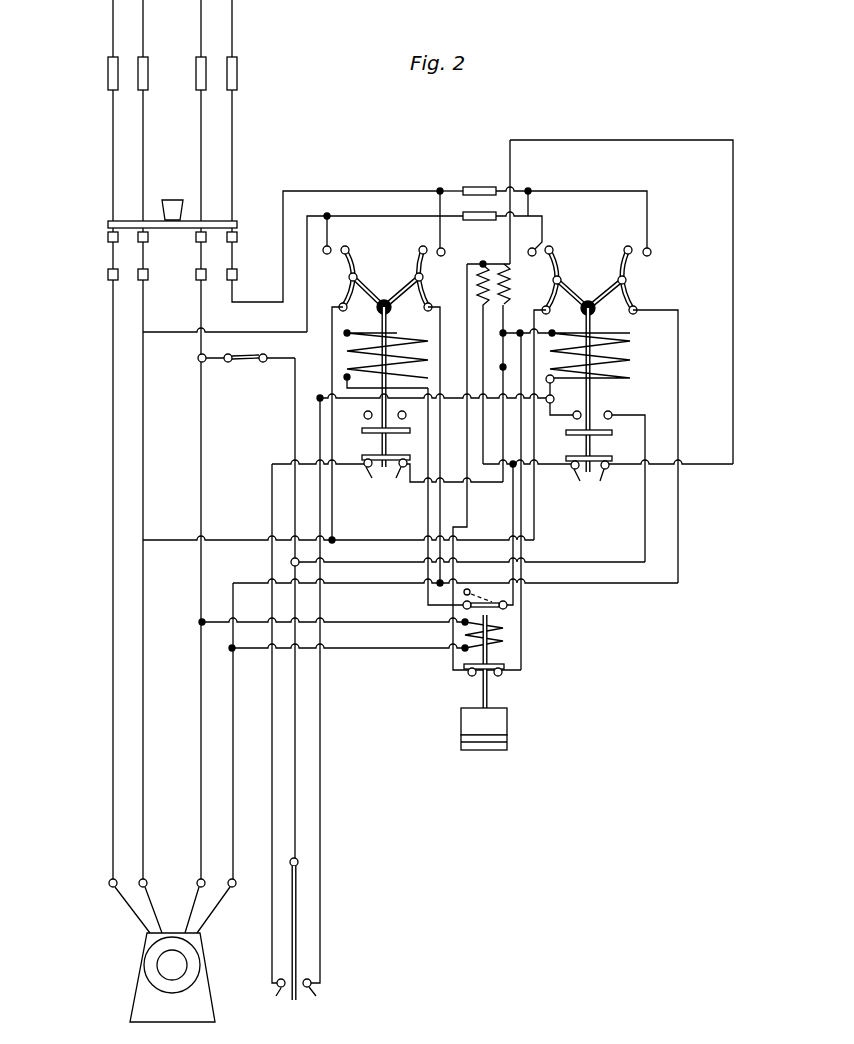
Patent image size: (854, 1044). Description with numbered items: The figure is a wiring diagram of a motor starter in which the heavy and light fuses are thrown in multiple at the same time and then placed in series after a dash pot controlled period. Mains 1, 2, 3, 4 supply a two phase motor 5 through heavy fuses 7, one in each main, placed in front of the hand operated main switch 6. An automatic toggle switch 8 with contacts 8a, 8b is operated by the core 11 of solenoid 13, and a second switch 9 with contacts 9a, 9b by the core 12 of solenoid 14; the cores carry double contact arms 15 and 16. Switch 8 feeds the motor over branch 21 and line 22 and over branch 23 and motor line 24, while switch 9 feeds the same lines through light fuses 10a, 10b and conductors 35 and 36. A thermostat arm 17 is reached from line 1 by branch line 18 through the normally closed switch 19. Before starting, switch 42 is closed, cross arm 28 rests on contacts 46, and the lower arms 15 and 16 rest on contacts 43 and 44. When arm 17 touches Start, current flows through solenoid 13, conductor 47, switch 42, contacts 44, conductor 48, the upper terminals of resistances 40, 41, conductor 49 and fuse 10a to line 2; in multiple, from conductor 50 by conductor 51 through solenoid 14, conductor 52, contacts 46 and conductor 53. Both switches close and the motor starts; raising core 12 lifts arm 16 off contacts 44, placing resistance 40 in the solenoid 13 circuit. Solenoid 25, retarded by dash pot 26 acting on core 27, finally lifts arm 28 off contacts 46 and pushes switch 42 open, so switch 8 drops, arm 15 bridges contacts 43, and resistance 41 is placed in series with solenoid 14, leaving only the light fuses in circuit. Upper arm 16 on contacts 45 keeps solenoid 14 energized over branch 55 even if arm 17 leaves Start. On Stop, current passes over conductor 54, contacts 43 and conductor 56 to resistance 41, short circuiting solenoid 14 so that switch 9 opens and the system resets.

The main 1 is at (201, 27).
The main 2 is at (232, 28).
The main 3 is at (113, 22).
The main 4 is at (143, 26).
The motor 5 is at (168, 950).
The main switch 6 is at (108, 222).
The heavy fuses 7 is at (248, 82).
The automatically operating switch 8 is at (385, 280).
The contact 8a is at (437, 250).
The switch terminal 8b is at (330, 248).
The switch 9 is at (589, 280).
The contact 9a is at (644, 249).
The contact 9b is at (536, 250).
The light fuse 10a is at (481, 186).
The light fuse 10b is at (483, 219).
The solenoid core 11 is at (380, 324).
The solenoid core 12 is at (592, 328).
The solenoid 13 is at (400, 330).
The solenoid 14 is at (626, 354).
The double contact arms 15 is at (404, 438).
The double contact arms 16 is at (616, 440).
The thermostat arm 17 is at (300, 906).
The branch line 18 is at (295, 430).
The switch 19 is at (243, 362).
The branch 21 is at (443, 448).
The line 22 is at (238, 768).
The branch 23 is at (338, 512).
The motor line 24 is at (148, 768).
The solenoid 25 is at (492, 636).
The dash pot 26 is at (510, 726).
The solenoid core 27 is at (492, 702).
The cross arm 28 is at (500, 664).
The conductor 35 is at (682, 388).
The conductor 36 is at (547, 508).
The resistance 40 is at (476, 284).
The resistance 41 is at (510, 296).
The switch 42 is at (498, 604).
The contacts 43 is at (380, 480).
The contacts 44 is at (595, 482).
The contacts 45 is at (583, 412).
The contacts 46 is at (468, 676).
The conductor 47 is at (428, 514).
The conductor 48 is at (735, 256).
The conductor 49 is at (532, 200).
The conductor 50 is at (320, 690).
The conductor 51 is at (462, 395).
The conductor 52 is at (523, 540).
The conductor 53 is at (468, 500).
The conductor 54 is at (272, 712).
The branch 55 is at (468, 490).
The conductor 56 is at (505, 362).